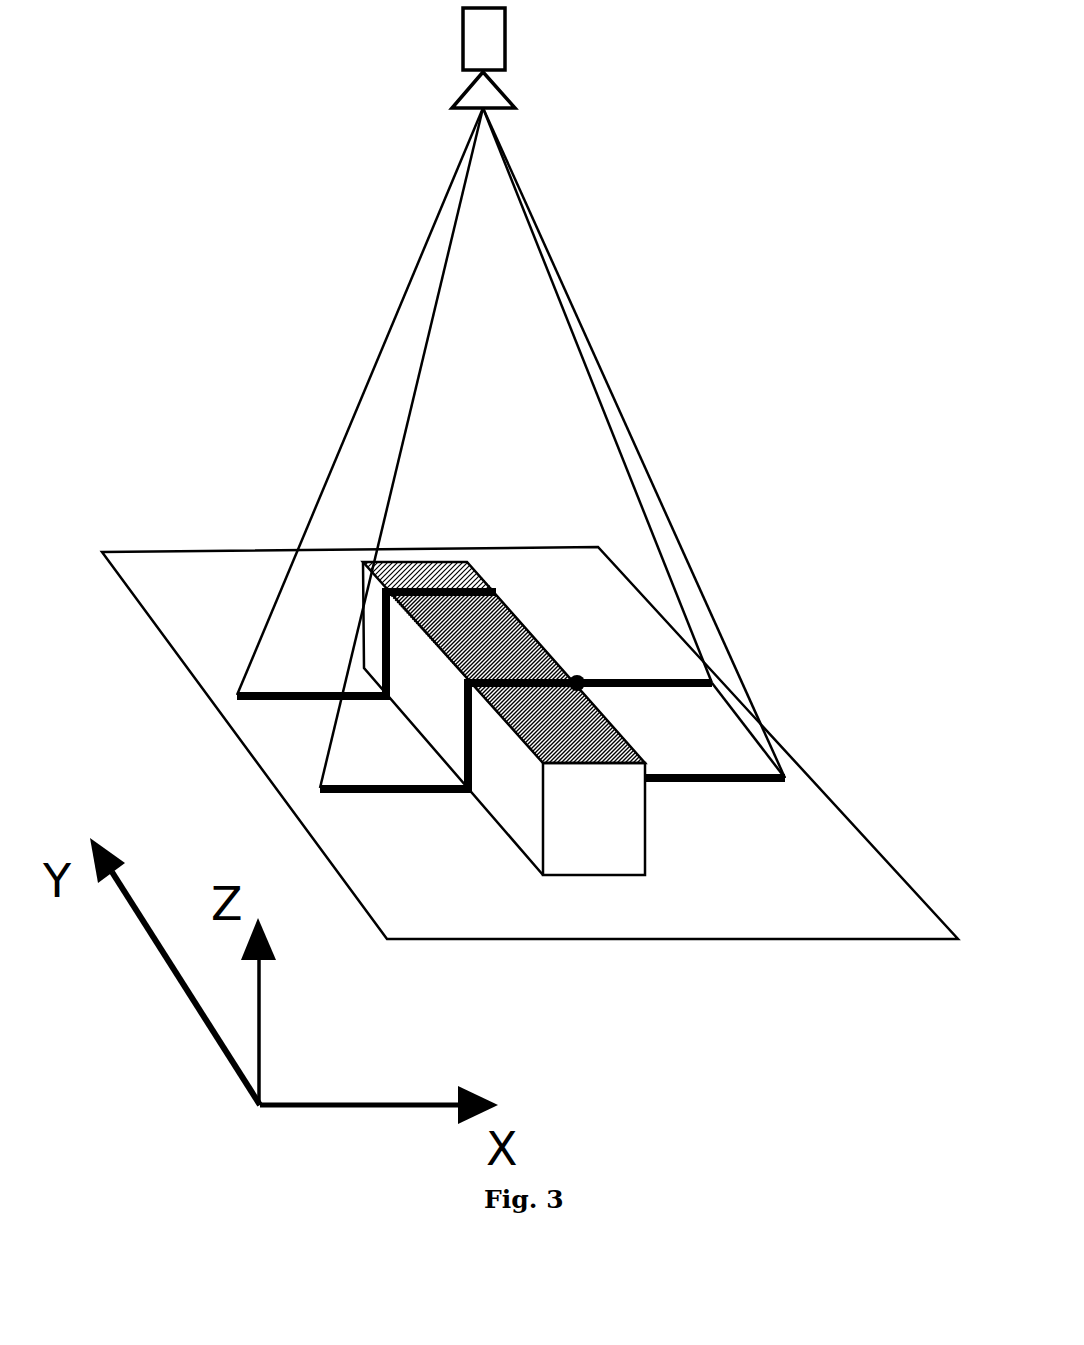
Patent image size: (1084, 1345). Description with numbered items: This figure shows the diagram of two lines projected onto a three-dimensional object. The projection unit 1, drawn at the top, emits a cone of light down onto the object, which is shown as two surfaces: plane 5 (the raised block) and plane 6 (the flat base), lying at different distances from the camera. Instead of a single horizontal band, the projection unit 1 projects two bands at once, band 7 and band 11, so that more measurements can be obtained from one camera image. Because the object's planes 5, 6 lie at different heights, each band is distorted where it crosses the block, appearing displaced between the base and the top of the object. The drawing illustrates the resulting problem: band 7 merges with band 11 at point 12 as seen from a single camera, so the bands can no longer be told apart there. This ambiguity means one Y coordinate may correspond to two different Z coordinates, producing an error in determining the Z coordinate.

The projection unit 1 is at (463, 37).
The plane 5 is at (607, 717).
The plane 6 is at (763, 939).
The band 7 is at (694, 689).
The band 11 is at (320, 790).
The point 12 is at (578, 678).